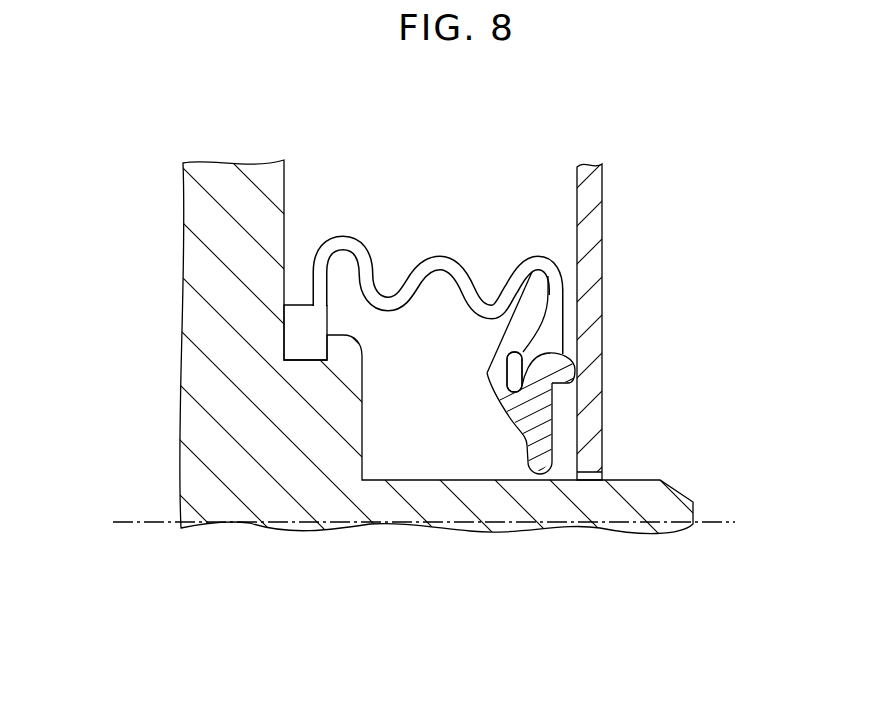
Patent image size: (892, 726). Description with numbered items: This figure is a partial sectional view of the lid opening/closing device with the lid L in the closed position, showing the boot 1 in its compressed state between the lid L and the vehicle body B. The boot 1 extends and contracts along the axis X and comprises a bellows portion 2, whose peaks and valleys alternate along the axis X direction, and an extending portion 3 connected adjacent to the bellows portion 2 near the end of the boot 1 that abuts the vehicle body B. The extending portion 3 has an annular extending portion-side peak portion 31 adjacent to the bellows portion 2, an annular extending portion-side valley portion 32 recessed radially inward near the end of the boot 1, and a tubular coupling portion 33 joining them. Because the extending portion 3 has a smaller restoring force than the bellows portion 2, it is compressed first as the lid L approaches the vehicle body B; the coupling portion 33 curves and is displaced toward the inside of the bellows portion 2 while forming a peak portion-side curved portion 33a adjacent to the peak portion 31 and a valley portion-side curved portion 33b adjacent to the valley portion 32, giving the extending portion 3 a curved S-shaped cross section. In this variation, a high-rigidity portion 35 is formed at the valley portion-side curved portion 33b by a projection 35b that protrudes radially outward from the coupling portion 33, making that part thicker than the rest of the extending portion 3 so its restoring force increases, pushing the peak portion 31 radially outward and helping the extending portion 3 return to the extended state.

The boot 1 is at (489, 400).
The bellows portion 2 is at (420, 252).
The extending portion 3 is at (559, 438).
The extending portion-side peak portion 31 is at (537, 260).
The extending portion-side valley portion 32 is at (512, 402).
The coupling portion 33 is at (549, 327).
The peak portion-side curved portion 33a is at (558, 297).
The valley portion-side curved portion 33b is at (493, 382).
The high-rigidity portion 35 is at (487, 374).
The projection 35b is at (522, 380).
The lid L is at (204, 217).
The vehicle body B is at (592, 228).
The axis X is at (731, 522).